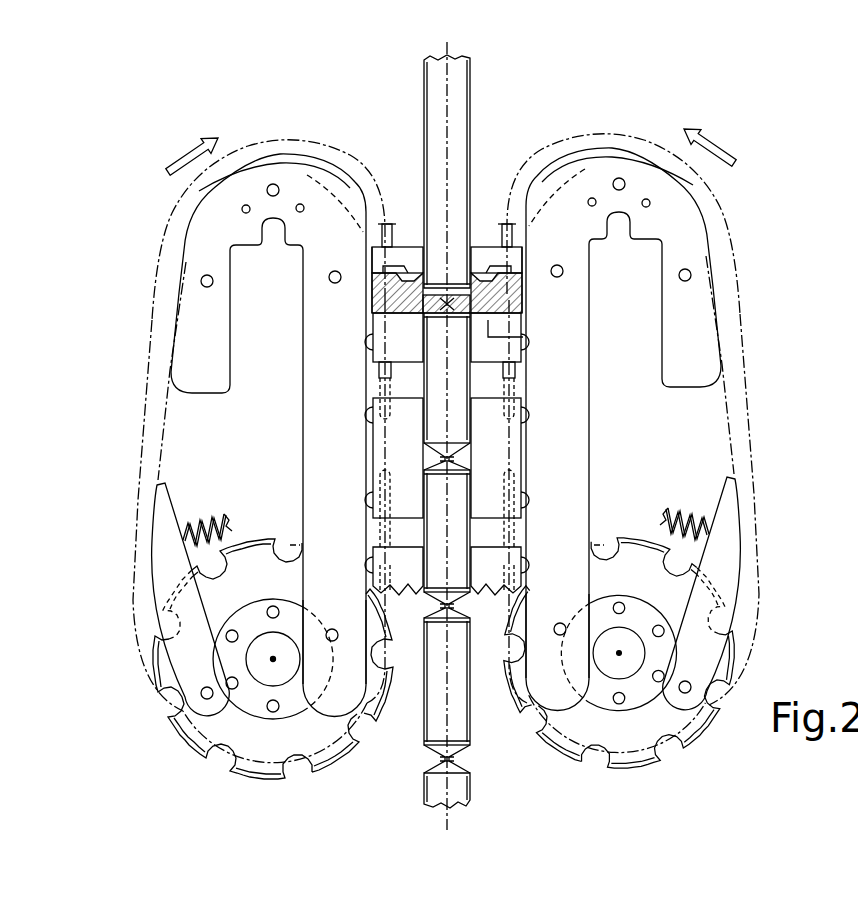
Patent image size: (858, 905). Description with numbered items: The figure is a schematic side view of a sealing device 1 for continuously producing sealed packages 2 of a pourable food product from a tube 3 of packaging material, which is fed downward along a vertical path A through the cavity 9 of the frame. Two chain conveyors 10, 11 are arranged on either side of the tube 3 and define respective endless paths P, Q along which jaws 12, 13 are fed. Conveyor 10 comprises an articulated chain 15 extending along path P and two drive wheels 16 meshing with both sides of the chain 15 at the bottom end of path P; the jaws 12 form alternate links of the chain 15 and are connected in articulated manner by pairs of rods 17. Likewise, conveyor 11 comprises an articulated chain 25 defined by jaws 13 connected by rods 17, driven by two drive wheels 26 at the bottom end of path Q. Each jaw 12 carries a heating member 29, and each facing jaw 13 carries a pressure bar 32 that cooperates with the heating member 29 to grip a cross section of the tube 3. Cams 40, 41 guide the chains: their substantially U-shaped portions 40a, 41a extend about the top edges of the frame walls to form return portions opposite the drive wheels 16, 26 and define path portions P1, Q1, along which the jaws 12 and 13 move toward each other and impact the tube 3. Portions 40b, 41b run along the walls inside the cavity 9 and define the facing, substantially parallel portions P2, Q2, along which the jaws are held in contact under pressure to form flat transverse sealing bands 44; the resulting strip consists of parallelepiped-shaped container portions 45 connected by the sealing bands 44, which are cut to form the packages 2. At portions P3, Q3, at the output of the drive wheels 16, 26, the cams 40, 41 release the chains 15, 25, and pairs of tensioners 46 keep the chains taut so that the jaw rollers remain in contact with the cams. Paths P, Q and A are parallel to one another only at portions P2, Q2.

The sealing device 1 is at (722, 768).
The sealed packages 2 is at (418, 801).
The tube of packaging material 3 is at (420, 118).
The cavity 9 is at (408, 200).
The chain conveyor 10 is at (231, 782).
The chain conveyor 11 is at (623, 782).
The jaws 12 is at (373, 330).
The jaws 13 is at (510, 326).
The articulated chain 15 is at (368, 407).
The drive wheels 16 is at (186, 735).
The rods 17 is at (380, 230).
The articulated chain 25 is at (532, 343).
The drive wheels 26 is at (666, 782).
The heating member 29 is at (373, 297).
The pressure bar 32 is at (525, 300).
The cam 40 is at (203, 320).
The U-shaped portion 40a is at (308, 187).
The cam portion 40b is at (314, 447).
The cam 41 is at (276, 154).
The U-shaped portion 41a is at (232, 157).
The cam portion 41b is at (446, 632).
The sealing bands 44 is at (430, 604).
The container portions 45 is at (430, 718).
The tensioners 46 is at (148, 528).
The vertical path A is at (445, 54).
The endless path P is at (156, 222).
The path portion P1 is at (352, 165).
The path portion P2 is at (378, 470).
The path portion P3 is at (140, 368).
The endless path Q is at (735, 248).
The path portion Q1 is at (532, 170).
The path portion Q2 is at (516, 437).
The path portion Q3 is at (750, 396).